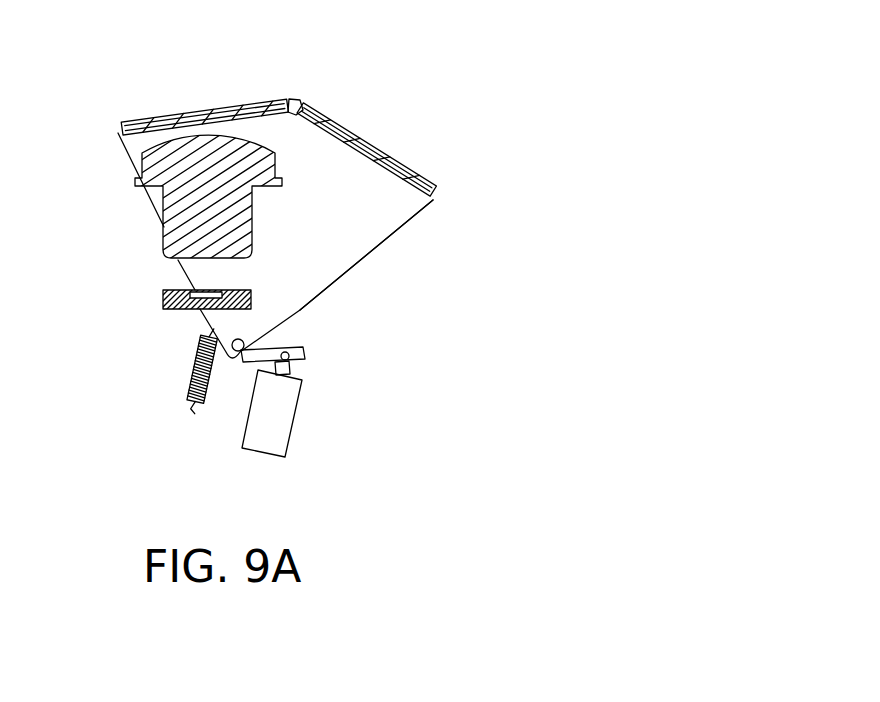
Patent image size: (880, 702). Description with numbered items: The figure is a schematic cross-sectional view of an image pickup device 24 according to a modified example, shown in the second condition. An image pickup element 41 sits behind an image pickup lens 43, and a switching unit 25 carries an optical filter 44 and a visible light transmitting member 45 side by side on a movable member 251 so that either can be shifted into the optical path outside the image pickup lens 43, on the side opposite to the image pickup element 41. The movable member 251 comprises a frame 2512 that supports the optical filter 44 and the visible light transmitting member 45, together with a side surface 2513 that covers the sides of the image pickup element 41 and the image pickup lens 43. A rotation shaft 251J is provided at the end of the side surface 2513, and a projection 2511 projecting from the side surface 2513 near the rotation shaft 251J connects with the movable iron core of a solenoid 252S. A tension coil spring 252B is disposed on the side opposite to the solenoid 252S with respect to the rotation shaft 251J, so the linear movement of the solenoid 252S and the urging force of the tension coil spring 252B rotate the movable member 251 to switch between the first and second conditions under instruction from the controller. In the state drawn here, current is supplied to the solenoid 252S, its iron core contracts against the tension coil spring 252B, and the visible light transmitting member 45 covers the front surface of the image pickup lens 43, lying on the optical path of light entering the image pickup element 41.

The image pickup device 24 is at (508, 56).
The switching unit 25 is at (470, 203).
The movable member 251 is at (367, 240).
The projection 2511 is at (304, 351).
The frame 2512 is at (293, 100).
The side surface 2513 is at (387, 202).
The rotation shaft 251J is at (232, 362).
The tension coil spring 252B is at (170, 395).
The solenoid 252S is at (287, 398).
The image pickup element 41 is at (163, 299).
The image pickup lens 43 is at (243, 221).
The optical filter 44 is at (370, 144).
The visible light transmitting member 45 is at (242, 100).